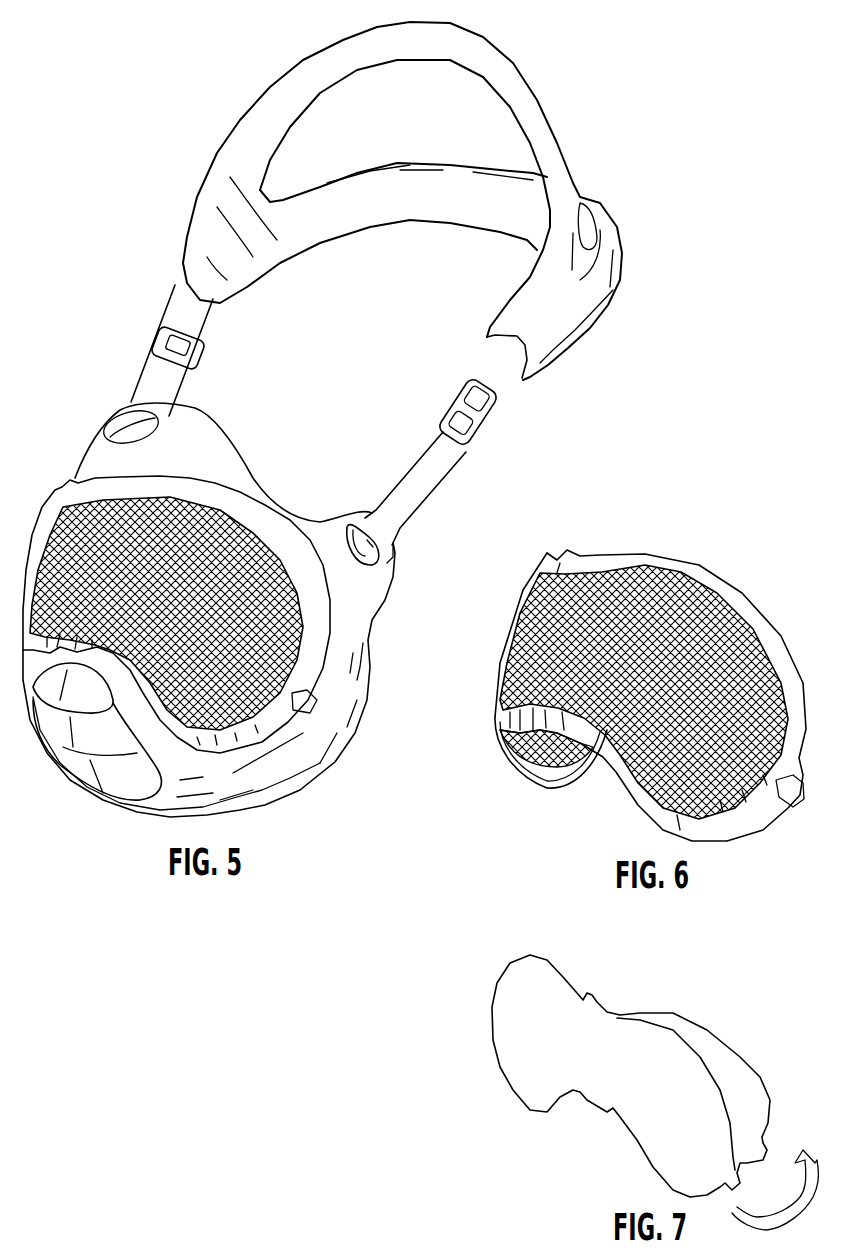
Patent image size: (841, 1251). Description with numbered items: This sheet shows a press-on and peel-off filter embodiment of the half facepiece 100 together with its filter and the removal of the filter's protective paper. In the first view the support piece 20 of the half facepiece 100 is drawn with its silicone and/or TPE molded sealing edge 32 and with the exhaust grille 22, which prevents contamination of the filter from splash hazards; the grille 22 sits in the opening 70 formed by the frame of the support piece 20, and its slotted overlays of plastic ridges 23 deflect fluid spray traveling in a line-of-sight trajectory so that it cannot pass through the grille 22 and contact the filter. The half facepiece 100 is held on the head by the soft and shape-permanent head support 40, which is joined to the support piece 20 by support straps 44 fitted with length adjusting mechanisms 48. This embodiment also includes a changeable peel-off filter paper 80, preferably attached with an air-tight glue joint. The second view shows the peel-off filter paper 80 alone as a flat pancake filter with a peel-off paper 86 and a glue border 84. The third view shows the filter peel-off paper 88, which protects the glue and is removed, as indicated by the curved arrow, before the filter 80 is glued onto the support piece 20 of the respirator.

In FIG. 5, the half facepiece 100 is at (184, 127).
In FIG. 5, the head harness 40 is at (547, 127).
In FIG. 5, the molded sealing edge 32 is at (163, 452).
In FIG. 5, the peel-off filter paper 80 is at (57, 510).
In FIG. 6, the peel-off filter paper 80 is at (548, 667).
In FIG. 5, the length adjusting mechanism 48 is at (478, 447).
In FIG. 5, the support strap 44 is at (431, 542).
In FIG. 5, the support piece 20 is at (141, 862).
In FIG. 5, the grille 22 is at (97, 758).
In FIG. 5, the ridges 23 is at (97, 758).
In FIG. 5, the opening 70 is at (63, 727).
In FIG. 6, the glue border 84 is at (573, 560).
In FIG. 6, the peel-off paper 86 is at (795, 810).
In FIG. 7, the filter peel-off paper 88 is at (725, 1063).